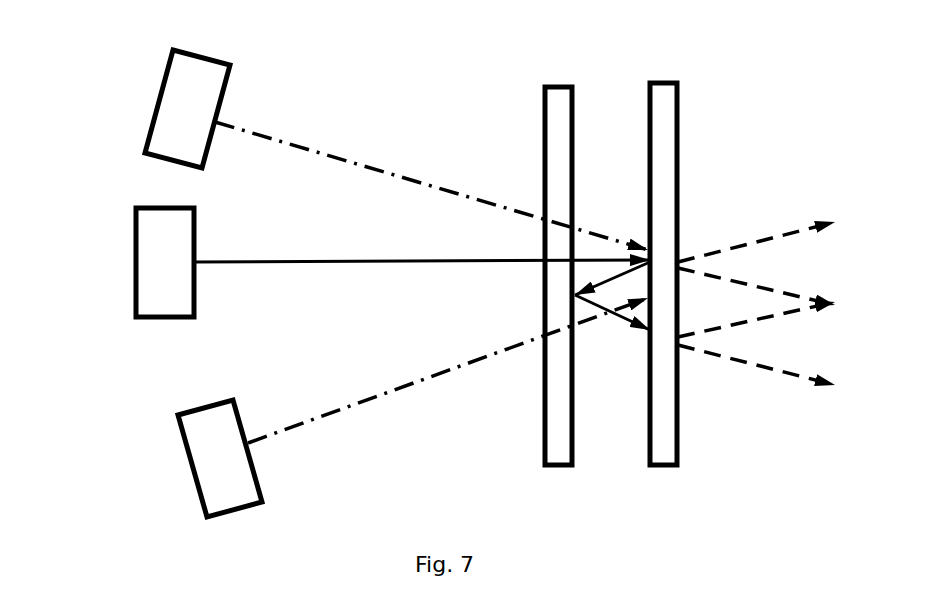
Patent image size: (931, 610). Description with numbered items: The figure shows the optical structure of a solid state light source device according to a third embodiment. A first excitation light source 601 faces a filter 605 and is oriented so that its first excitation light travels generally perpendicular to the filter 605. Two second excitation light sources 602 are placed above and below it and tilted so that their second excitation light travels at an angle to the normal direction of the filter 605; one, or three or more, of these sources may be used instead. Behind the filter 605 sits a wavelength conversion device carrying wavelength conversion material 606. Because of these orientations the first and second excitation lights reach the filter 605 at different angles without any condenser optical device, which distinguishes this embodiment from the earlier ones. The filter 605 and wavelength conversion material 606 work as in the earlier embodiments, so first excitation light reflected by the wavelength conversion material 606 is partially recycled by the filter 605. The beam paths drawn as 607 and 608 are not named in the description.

The first excitation light source 601 is at (145, 263).
The second excitation light source 602 is at (197, 85).
The filter 605 is at (557, 98).
The wavelength conversion material 606 is at (662, 95).
The main light beam 607 is at (257, 262).
The auxiliary light beam 608 is at (352, 160).